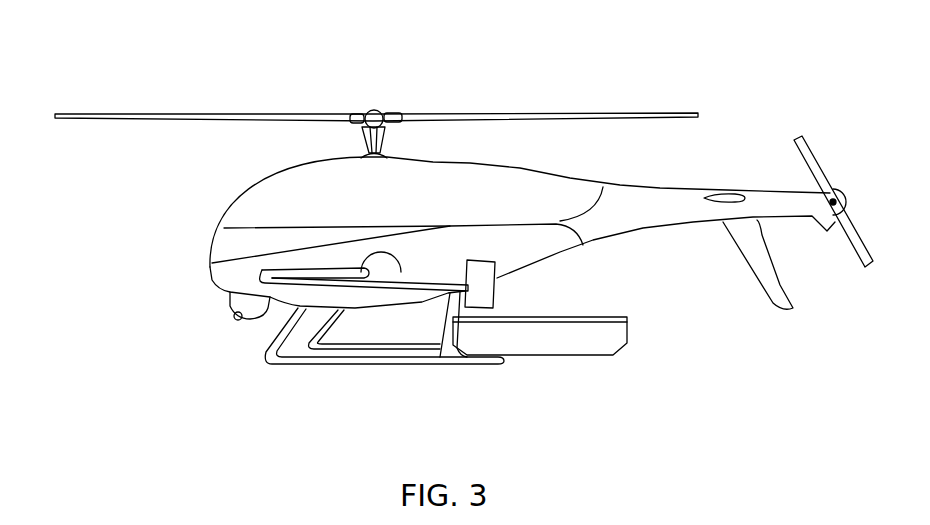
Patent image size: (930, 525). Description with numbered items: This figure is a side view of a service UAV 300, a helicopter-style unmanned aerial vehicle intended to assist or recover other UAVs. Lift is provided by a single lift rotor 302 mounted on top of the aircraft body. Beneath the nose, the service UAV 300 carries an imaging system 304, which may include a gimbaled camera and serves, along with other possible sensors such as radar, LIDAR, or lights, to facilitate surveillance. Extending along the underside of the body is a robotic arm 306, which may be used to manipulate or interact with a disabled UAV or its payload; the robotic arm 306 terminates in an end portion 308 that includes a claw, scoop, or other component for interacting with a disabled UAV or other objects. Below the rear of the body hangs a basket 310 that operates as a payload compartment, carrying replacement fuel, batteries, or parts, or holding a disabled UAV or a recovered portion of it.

The service UAV 300 is at (183, 82).
The lift rotor 302 is at (373, 109).
The imaging system 304 is at (232, 312).
The robotic arm 306 is at (347, 292).
The end portion 308 is at (488, 283).
The basket 310 is at (555, 347).